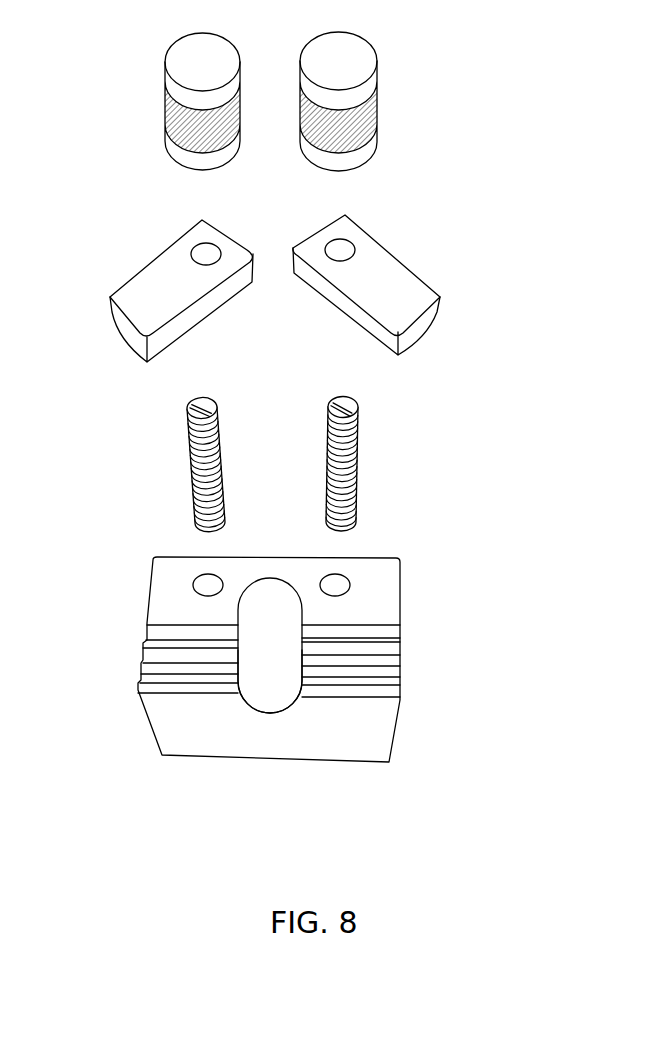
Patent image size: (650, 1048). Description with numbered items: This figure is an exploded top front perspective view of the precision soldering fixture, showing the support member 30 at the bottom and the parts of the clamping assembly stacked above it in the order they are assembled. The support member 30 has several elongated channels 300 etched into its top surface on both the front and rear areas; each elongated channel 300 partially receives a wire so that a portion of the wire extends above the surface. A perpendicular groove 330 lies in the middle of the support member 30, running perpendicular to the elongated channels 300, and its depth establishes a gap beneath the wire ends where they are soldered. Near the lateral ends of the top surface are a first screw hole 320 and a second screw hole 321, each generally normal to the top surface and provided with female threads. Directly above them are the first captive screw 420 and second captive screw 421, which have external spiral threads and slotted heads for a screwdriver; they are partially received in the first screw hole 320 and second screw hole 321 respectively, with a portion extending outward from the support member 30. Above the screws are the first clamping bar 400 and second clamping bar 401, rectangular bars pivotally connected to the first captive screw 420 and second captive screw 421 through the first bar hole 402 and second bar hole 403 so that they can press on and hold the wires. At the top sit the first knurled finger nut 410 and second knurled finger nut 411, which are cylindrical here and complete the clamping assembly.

The support member 30 is at (268, 688).
The elongated channel 300 is at (153, 635).
The first screw hole 320 is at (199, 584).
The second screw hole 321 is at (338, 588).
The perpendicular groove 330 is at (273, 702).
The first clamping bar 400 is at (140, 291).
The second clamping bar 401 is at (415, 283).
The first bar hole 402 is at (192, 253).
The second bar hole 403 is at (356, 247).
The first knurled finger nut 410 is at (165, 68).
The second knurled finger nut 411 is at (377, 70).
The first captive screw 420 is at (187, 422).
The second captive screw 421 is at (358, 417).